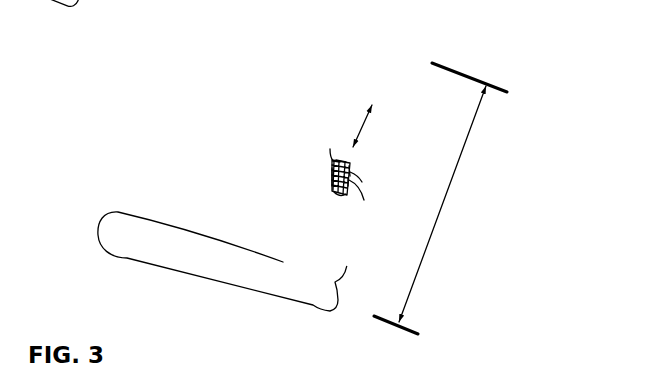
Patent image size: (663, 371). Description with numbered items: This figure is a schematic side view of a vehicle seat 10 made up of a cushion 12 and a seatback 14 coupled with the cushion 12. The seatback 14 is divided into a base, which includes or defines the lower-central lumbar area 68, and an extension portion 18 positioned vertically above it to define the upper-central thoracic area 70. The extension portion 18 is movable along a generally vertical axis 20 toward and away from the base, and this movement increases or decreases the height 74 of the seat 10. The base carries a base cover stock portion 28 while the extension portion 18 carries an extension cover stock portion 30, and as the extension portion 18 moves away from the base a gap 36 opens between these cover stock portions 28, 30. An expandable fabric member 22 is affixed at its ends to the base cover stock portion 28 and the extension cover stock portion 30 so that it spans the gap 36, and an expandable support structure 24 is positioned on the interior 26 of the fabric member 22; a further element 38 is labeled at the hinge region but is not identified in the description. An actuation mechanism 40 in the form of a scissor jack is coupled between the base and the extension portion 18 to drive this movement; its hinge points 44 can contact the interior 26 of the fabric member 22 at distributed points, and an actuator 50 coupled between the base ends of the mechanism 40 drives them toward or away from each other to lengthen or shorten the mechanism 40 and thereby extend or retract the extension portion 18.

The vehicle seat 10 is at (342, 48).
The cushion 12 is at (184, 250).
The seatback 14 is at (408, 117).
The extension portion 18 is at (395, 85).
The axis 20 is at (356, 128).
The expandable fabric member 22 is at (331, 170).
The expandable support structure 24 is at (361, 177).
The interior 26 is at (351, 172).
The base cover stock portion 28 is at (320, 216).
The extension cover stock portion 30 is at (373, 77).
The gap 36 is at (328, 173).
The hinge knuckle 38 is at (338, 159).
The actuation mechanism 40 is at (347, 180).
The hinge points 44 is at (334, 162).
The actuator 50 is at (341, 195).
The lower-central lumbar area 68 is at (295, 232).
The upper-central thoracic area 70 is at (348, 100).
The height 74 is at (453, 177).